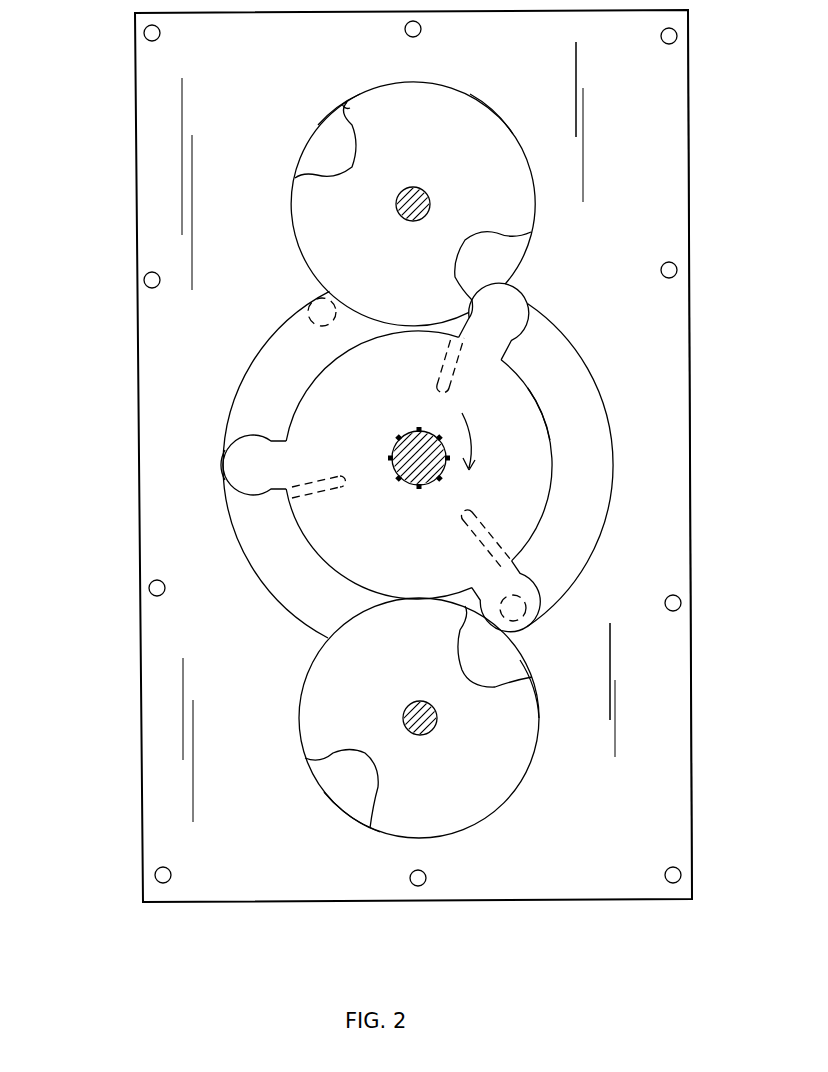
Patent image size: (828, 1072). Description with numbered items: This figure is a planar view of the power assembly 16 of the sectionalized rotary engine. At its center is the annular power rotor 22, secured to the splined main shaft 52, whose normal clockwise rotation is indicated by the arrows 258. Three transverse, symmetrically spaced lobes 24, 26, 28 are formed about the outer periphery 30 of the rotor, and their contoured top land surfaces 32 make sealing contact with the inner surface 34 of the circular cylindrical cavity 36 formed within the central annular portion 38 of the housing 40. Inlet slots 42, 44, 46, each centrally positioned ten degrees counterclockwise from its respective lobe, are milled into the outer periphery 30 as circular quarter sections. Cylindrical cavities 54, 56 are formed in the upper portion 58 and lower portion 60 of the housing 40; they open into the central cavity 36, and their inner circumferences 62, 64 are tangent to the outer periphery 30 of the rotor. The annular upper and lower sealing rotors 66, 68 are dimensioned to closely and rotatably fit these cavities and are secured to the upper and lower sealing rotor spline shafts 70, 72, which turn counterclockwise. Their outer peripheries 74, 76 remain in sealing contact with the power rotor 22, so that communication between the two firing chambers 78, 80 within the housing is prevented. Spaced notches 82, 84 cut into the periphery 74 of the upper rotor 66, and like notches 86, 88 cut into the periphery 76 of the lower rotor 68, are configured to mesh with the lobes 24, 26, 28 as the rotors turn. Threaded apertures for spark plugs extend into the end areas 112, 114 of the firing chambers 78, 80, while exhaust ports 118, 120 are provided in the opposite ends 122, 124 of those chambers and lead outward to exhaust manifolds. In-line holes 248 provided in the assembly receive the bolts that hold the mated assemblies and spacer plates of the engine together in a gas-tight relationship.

The power assembly 16 is at (128, 641).
The housing 40 is at (692, 636).
The in-line holes 248 is at (421, 29).
The upper portion 58 is at (628, 216).
The lower portion 60 is at (645, 795).
The upper sealing rotor 66 is at (490, 170).
The outer periphery of upper sealing rotor 74 is at (513, 133).
The upper cylindrical cavity 54 is at (318, 125).
The upper sealing rotor spline shaft 70 is at (397, 208).
The notch 84 is at (355, 158).
The inner circumference of upper cavity 62 is at (343, 110).
The notch 82 is at (500, 231).
The lower sealing rotor 68 is at (489, 765).
The outer periphery of lower sealing rotor 76 is at (539, 720).
The lower cylindrical cavity 56 is at (342, 815).
The inner circumference of lower cavity 64 is at (328, 793).
The lower sealing rotor spline shaft 72 is at (416, 704).
The notch 86 is at (468, 679).
The notch 88 is at (372, 764).
The annular power rotor 22 is at (522, 492).
The outer periphery of power rotor 30 is at (530, 388).
The lobe 26 is at (264, 476).
The top land surfaces 32 is at (222, 471).
The lobe 28 is at (510, 324).
The lobe 24 is at (505, 599).
The splined main shaft 52 is at (391, 462).
The arrows 258 is at (474, 438).
The inlet slot 44 is at (314, 490).
The inlet slot 46 is at (443, 367).
The inlet slot 42 is at (481, 528).
The inner surface 34 is at (238, 386).
The circular cylindrical cavity 36 is at (241, 547).
The central annular portion 38 is at (655, 512).
The firing chamber 78 is at (594, 497).
The firing chamber 80 is at (289, 561).
The end area 112 is at (592, 413).
The opposite end 122 is at (552, 557).
The end area 114 is at (318, 595).
The opposite end 124 is at (278, 347).
The exhaust port 120 is at (307, 307).
The exhaust port 118 is at (512, 622).